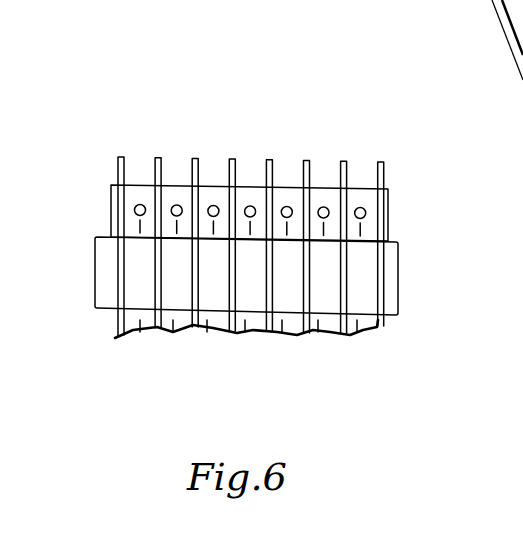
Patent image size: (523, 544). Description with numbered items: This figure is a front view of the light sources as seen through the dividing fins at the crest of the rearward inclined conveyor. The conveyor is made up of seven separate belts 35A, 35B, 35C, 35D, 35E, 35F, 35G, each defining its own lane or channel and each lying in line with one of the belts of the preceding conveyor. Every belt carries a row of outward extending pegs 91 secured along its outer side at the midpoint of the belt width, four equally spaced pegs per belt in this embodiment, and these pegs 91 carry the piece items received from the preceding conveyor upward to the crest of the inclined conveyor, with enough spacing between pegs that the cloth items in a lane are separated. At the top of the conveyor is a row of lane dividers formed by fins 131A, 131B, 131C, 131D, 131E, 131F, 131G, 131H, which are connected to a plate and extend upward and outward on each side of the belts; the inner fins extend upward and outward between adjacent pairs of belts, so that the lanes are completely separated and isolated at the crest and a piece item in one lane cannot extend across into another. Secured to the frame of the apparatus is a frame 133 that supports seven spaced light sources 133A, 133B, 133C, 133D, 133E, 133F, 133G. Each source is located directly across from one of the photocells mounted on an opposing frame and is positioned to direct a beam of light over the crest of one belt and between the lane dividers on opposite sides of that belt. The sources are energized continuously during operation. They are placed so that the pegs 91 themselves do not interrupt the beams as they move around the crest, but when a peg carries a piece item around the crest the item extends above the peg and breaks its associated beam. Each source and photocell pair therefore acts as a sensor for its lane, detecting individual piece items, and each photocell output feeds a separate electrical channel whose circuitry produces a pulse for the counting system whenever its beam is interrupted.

The fin 131A is at (381, 162).
The fin 131B is at (342, 161).
The fin 131C is at (306, 160).
The fin 131D is at (268, 160).
The fin 131E is at (231, 158).
The fin 131F is at (195, 158).
The fin 131G is at (158, 157).
The fin 131H is at (120, 157).
The frame 133 is at (390, 220).
The light source 133A is at (366, 211).
The light source 133B is at (320, 217).
The light source 133C is at (283, 217).
The light source 133D is at (249, 217).
The light source 133E is at (209, 215).
The light source 133F is at (172, 215).
The light source 133G is at (136, 206).
The peg 91 is at (210, 235).
The belt 35A is at (357, 325).
The belt 35B is at (318, 325).
The belt 35C is at (282, 325).
The belt 35D is at (245, 325).
The belt 35E is at (207, 325).
The belt 35F is at (173, 325).
The belt 35G is at (140, 330).